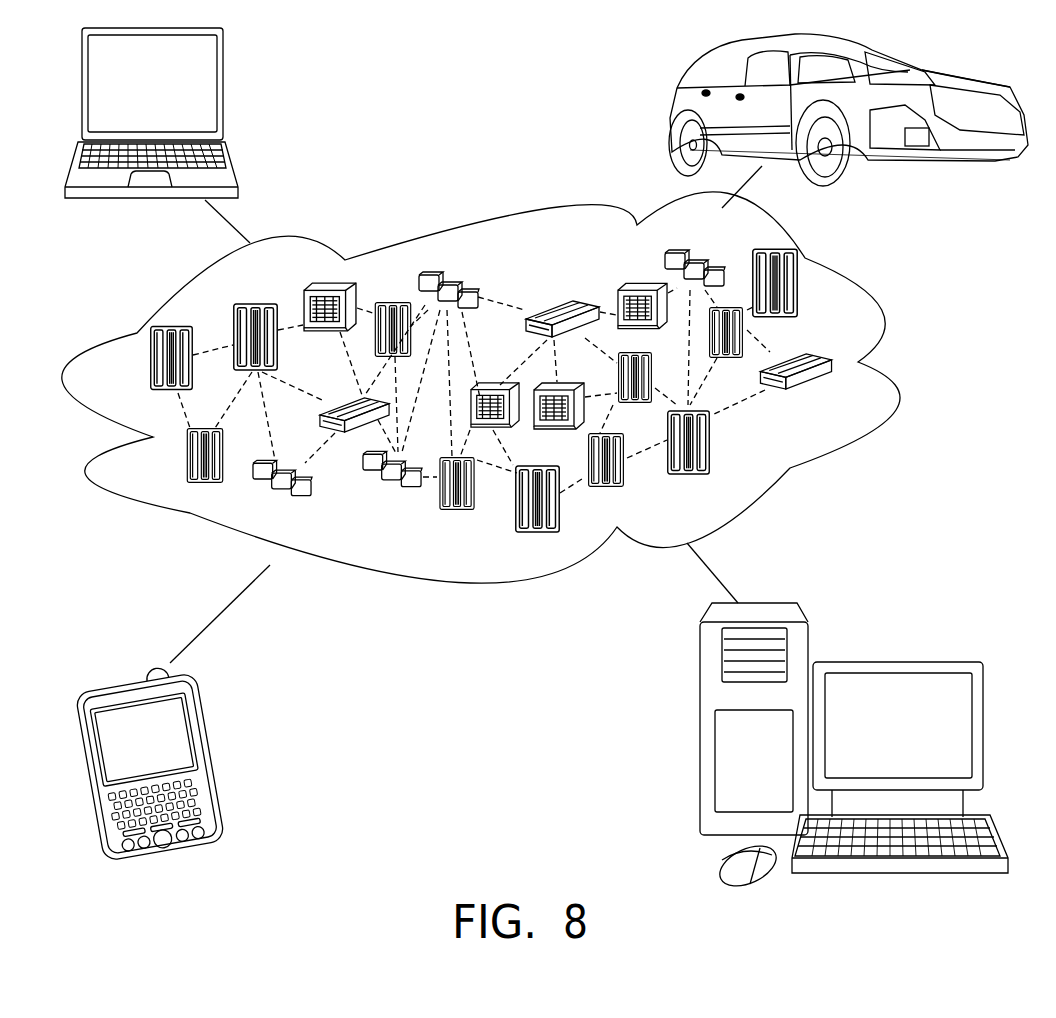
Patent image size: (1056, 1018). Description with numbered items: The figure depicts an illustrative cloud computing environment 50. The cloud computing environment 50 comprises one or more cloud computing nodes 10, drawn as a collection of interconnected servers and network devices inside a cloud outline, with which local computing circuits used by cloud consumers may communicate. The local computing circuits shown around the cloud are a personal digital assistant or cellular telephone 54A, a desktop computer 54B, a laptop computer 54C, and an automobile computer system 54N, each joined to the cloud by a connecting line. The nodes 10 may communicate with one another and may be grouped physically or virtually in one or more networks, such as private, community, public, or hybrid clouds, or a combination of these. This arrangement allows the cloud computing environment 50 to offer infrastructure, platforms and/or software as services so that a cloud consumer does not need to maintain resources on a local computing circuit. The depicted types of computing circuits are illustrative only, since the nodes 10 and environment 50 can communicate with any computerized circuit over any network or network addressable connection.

The cloud computing node 10 is at (543, 390).
The cloud computing environment 50 is at (897, 371).
The personal digital assistant (PDA) or cellular telephone 54A is at (210, 753).
The desktop computer 54B is at (893, 662).
The laptop computer 54C is at (222, 92).
The automobile computer system 54N is at (674, 112).